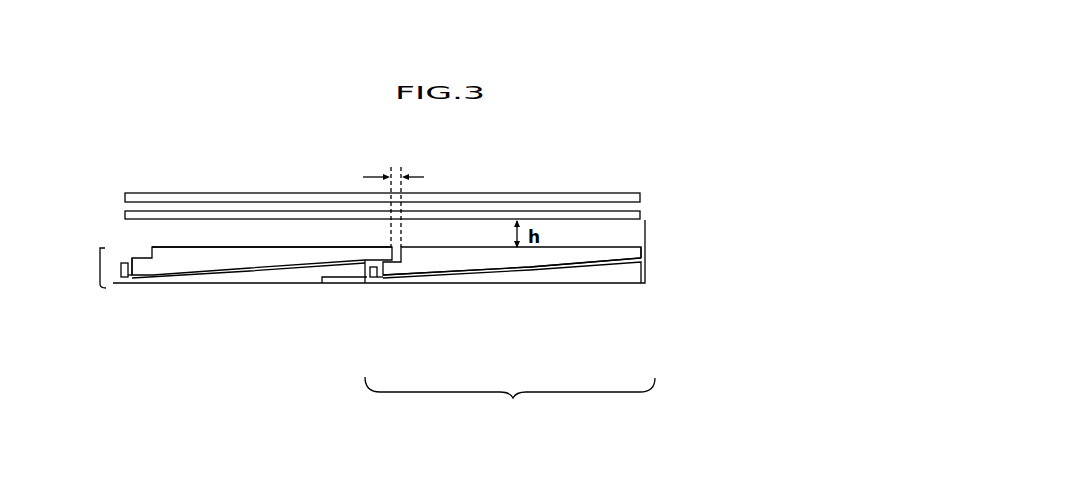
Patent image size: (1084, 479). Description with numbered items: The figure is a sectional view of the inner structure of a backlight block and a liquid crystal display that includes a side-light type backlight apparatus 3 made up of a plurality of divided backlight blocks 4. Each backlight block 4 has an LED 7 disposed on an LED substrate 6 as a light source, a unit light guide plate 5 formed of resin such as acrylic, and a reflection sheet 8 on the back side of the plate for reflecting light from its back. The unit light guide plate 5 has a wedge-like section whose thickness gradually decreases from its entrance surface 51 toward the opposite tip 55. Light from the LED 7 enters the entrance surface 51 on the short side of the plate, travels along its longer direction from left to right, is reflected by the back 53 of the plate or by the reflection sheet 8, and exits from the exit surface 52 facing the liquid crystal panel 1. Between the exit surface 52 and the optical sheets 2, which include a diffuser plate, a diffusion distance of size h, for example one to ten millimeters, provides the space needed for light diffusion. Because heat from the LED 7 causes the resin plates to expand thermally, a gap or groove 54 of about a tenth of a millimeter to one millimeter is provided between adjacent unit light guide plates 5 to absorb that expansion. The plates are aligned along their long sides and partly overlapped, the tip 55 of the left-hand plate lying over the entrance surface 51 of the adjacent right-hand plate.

The liquid crystal panel 1 is at (641, 198).
The optical sheets 2 is at (641, 216).
The backlight apparatus 3 is at (106, 286).
The backlight block 4 is at (510, 337).
The unit light guide plate 5 is at (180, 265).
The LED substrate 6 is at (334, 284).
The LED 7 is at (373, 278).
The reflection sheet 8 is at (438, 284).
The entrance surface 51 is at (133, 268).
The exit surface 52 is at (283, 247).
The back 53 is at (562, 262).
The gap (groove) 54 is at (414, 262).
The tip 55 is at (643, 252).